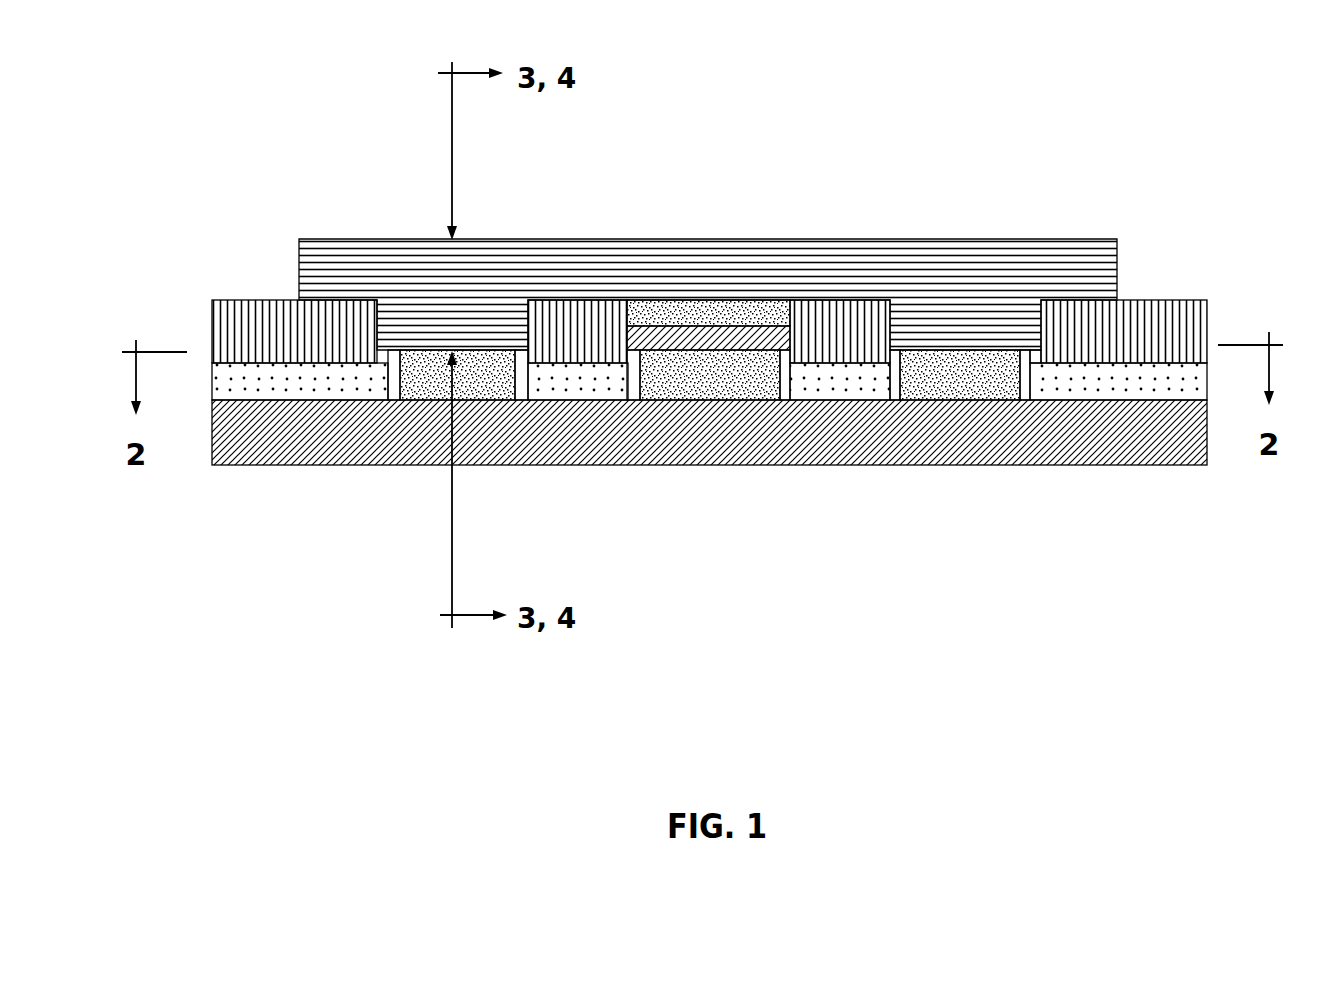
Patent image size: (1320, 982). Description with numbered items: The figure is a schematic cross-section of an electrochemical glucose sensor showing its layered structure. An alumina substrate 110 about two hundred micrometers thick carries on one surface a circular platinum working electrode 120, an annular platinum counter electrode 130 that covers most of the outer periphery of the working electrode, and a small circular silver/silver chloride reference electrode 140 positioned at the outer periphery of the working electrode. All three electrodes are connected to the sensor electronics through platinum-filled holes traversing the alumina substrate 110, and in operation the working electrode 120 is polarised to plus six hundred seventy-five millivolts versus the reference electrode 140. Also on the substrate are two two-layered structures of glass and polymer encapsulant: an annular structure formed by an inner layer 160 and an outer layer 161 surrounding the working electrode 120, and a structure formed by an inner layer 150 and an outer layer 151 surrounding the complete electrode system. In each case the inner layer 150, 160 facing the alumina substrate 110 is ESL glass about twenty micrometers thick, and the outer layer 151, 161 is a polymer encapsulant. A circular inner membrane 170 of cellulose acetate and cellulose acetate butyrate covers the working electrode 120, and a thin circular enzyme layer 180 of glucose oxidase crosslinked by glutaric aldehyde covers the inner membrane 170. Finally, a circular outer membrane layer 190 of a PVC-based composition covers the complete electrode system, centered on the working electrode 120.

The alumina substrate 110 is at (355, 427).
The working electrode 120 is at (708, 388).
The counter electrode 130 is at (490, 385).
The reference electrode 140 is at (957, 385).
The inner layer of ESL glass 150 is at (1117, 383).
The outer layer of polymer encapsulant 151 is at (313, 337).
The inner layer of ESL glass 160 is at (577, 387).
The outer layer of polymer encapsulant 161 is at (853, 335).
The inner membrane 170 is at (703, 335).
The enzyme layer 180 is at (737, 308).
The outer membrane layer 190 is at (400, 277).